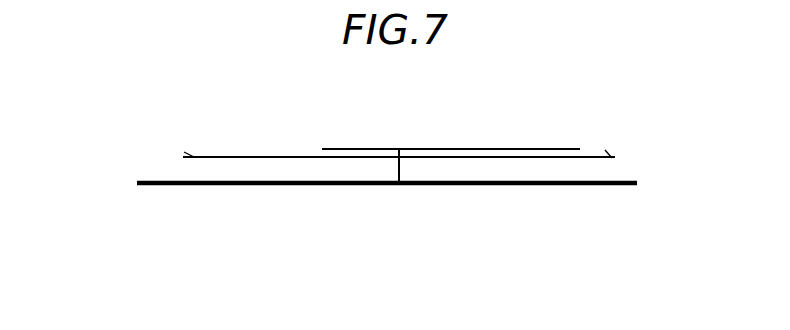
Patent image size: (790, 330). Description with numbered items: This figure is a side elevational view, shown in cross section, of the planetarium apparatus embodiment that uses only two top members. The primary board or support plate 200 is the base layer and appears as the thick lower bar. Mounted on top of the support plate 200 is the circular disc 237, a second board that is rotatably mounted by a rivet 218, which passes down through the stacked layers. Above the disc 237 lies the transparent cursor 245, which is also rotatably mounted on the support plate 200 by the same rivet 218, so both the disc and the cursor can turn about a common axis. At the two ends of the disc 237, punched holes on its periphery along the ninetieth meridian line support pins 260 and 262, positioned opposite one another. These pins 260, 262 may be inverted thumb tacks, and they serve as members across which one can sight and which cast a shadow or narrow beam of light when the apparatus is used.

The primary board 200 is at (175, 186).
The circular disc 237 is at (281, 156).
The transparent cursor 245 is at (378, 148).
The rivet 218 is at (400, 172).
The pin 260 is at (192, 153).
The pin 262 is at (608, 154).